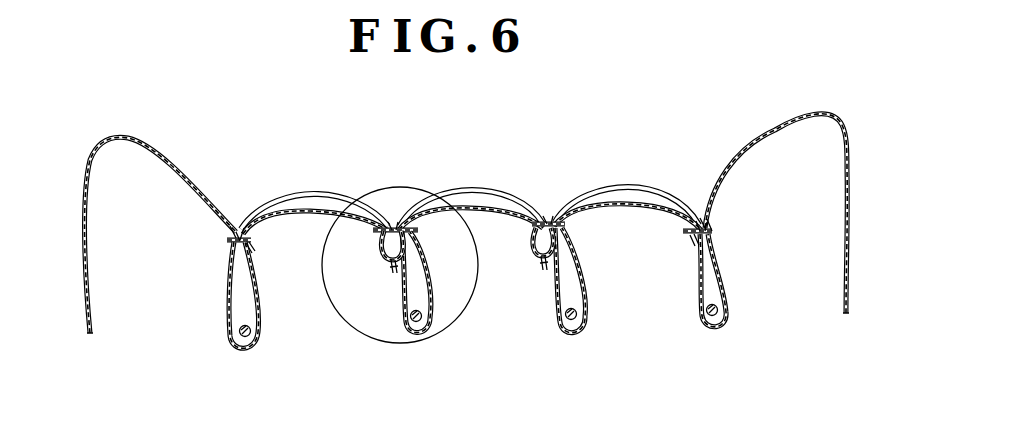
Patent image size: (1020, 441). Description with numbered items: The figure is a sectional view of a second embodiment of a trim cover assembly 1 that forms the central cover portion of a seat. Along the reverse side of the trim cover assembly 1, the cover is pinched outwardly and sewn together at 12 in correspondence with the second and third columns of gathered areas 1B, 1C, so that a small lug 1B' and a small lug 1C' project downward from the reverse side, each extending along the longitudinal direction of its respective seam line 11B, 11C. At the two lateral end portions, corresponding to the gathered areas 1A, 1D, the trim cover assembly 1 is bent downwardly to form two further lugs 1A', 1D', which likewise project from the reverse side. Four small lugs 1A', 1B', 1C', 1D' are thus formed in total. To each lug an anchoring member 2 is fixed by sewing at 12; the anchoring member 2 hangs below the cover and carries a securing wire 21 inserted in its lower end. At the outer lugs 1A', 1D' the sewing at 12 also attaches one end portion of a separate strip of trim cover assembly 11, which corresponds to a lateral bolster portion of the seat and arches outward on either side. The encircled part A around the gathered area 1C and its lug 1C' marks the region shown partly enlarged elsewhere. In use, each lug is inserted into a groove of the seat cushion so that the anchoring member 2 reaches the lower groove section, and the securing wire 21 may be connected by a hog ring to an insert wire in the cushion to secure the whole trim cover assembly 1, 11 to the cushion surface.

The trim cover assembly 1 is at (606, 191).
The separate strip of trim cover assembly 11 is at (168, 154).
The sewn portion 12 is at (228, 240).
The first gathered area 1A is at (683, 177).
The second gathered area 1B is at (536, 182).
The third gathered area 1C is at (375, 185).
The fourth gathered area 1D is at (232, 193).
The lug 1A' is at (667, 251).
The small lug 1B' is at (520, 252).
The small lug 1C' is at (367, 263).
The lug 1D' is at (210, 275).
The seam line 11B is at (544, 268).
The seam line 11C is at (394, 265).
The anchoring member 2 is at (233, 344).
The securing wire 21 is at (420, 333).
The part A is at (357, 336).